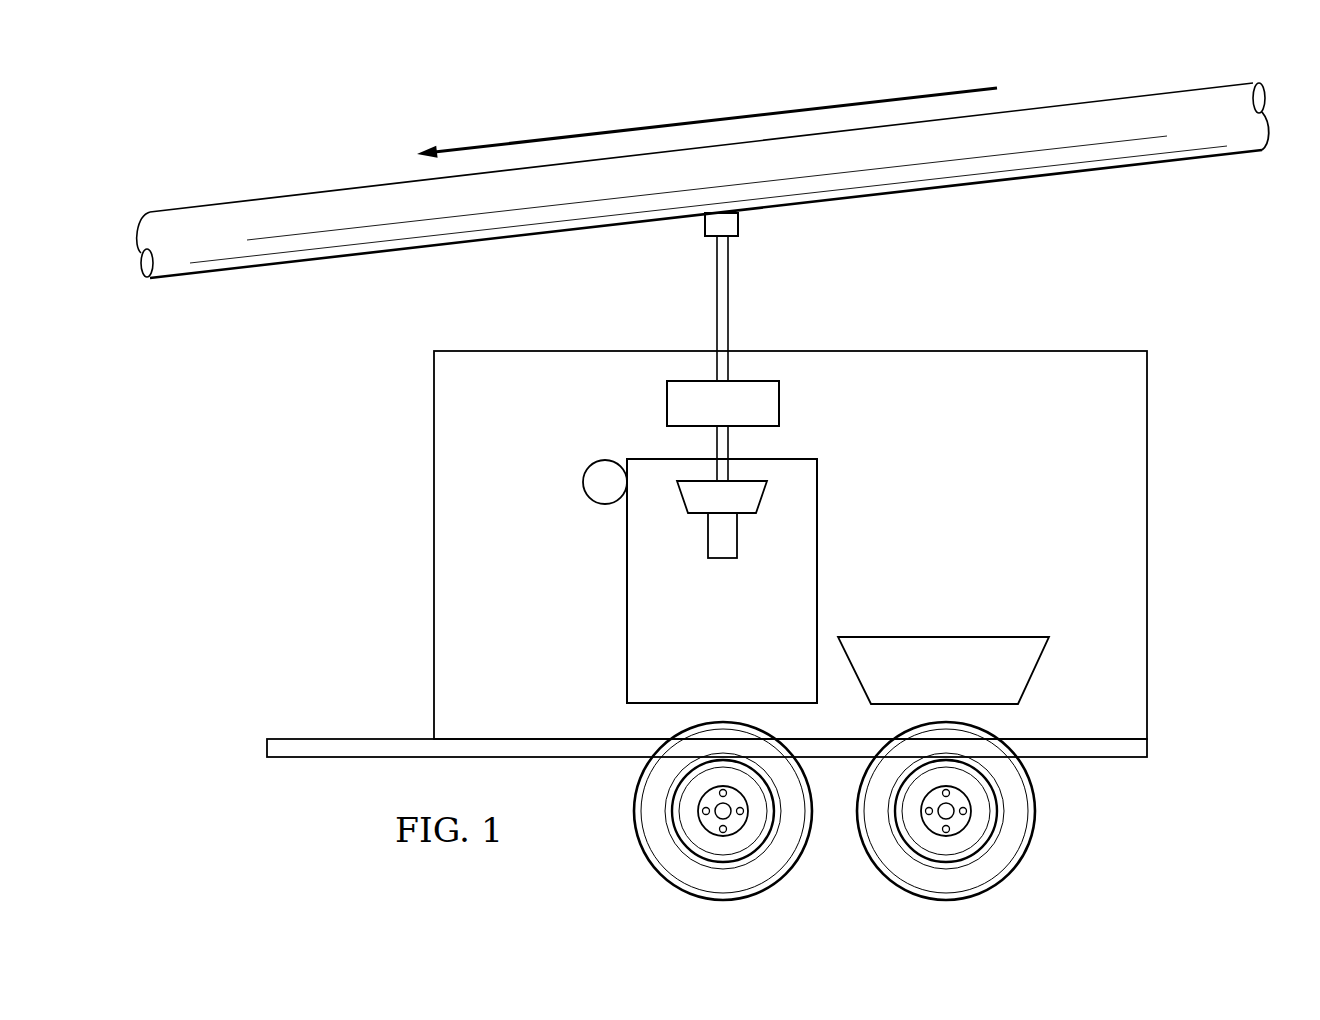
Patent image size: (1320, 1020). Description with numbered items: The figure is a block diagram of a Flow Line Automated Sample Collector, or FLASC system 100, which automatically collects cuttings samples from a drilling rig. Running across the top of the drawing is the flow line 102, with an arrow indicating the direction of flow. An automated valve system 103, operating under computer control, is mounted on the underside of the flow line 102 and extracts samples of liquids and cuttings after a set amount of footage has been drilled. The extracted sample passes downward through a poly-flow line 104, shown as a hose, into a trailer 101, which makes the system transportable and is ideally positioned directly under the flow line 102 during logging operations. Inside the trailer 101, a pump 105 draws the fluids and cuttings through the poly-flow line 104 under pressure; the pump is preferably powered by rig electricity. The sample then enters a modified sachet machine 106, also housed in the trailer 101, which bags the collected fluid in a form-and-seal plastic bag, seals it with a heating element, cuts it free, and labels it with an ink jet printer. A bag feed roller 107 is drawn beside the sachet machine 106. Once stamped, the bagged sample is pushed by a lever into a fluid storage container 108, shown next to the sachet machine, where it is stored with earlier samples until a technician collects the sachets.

The FLASC system 100 is at (325, 101).
The trailer 101 is at (1018, 350).
The flow line 102 is at (233, 200).
The automated valve system 103 is at (740, 222).
The poly-flow line 104 is at (717, 310).
The pump 105 is at (780, 402).
The sachet machine 106 is at (626, 581).
The bag feed roller 107 is at (584, 472).
The fluid storage container 108 is at (945, 636).